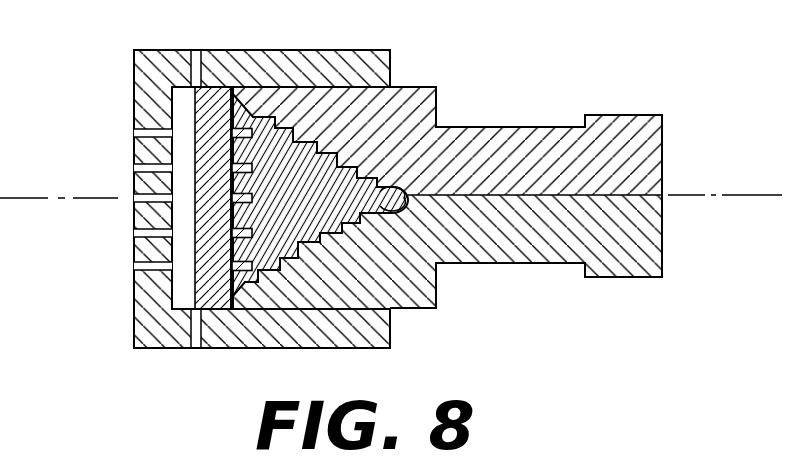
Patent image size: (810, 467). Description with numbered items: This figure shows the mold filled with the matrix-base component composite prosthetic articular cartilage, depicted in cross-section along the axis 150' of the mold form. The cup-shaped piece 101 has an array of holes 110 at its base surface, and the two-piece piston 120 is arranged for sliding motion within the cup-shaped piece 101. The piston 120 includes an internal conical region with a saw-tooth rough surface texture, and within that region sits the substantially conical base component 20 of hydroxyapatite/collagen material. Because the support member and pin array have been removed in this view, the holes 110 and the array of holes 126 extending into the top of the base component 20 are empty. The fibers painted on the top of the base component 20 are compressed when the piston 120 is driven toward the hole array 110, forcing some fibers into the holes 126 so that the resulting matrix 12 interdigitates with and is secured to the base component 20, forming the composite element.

The cup-shaped piece 101 is at (323, 57).
The array of holes 110 is at (134, 168).
The matrix 12 is at (228, 96).
The array of holes 126 is at (234, 266).
The base component 20 is at (295, 225).
The piston 120 is at (450, 305).
The axis 150' is at (391, 217).